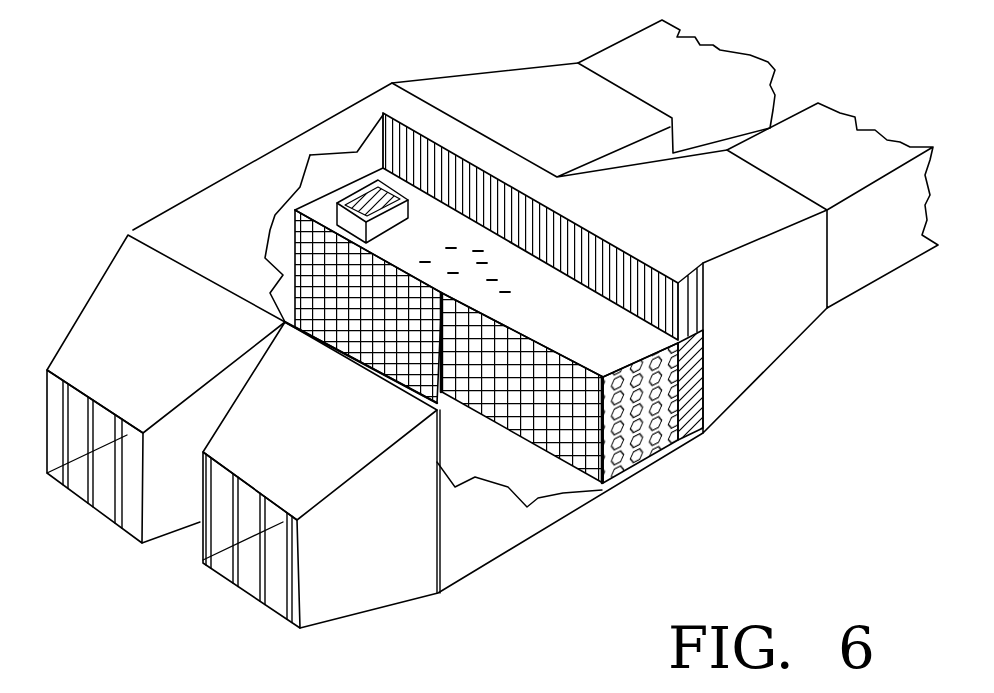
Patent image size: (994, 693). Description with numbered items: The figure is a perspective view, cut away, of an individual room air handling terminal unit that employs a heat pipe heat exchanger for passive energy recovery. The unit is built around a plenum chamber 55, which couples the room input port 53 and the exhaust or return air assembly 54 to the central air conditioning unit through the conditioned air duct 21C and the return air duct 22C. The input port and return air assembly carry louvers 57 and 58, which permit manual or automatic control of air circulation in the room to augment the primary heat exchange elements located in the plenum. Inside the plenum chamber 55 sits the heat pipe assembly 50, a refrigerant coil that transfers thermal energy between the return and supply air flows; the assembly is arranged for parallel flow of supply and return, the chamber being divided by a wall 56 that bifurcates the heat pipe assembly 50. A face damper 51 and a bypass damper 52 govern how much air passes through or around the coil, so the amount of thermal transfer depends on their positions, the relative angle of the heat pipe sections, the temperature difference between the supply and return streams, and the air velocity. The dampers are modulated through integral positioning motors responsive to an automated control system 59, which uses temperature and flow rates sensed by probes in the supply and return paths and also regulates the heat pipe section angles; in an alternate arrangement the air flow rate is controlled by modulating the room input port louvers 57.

The conditioned air duct 21C is at (846, 168).
The return air duct 22C is at (688, 85).
The heat pipe assembly 50 is at (650, 447).
The face damper 51 is at (705, 432).
The bypass damper 52 is at (693, 307).
The room input port 53 is at (321, 497).
The exhaust or return air assembly 54 is at (166, 415).
The plenum chamber 55 is at (505, 520).
The wall 56 is at (444, 297).
The louvers 57 is at (262, 580).
The louvers 58 is at (67, 475).
The automated control system 59 is at (345, 193).